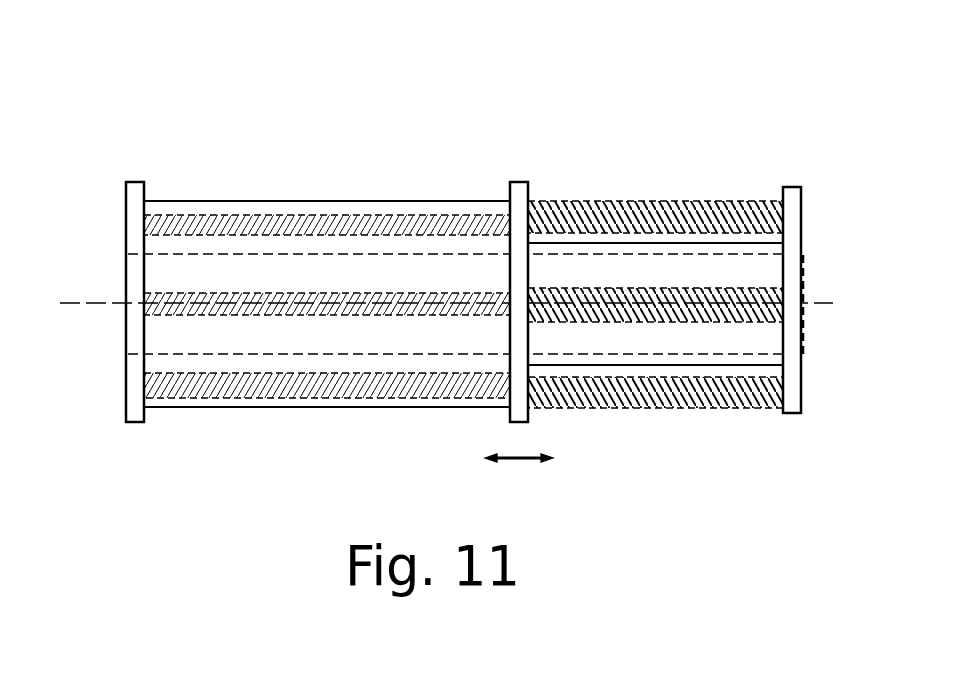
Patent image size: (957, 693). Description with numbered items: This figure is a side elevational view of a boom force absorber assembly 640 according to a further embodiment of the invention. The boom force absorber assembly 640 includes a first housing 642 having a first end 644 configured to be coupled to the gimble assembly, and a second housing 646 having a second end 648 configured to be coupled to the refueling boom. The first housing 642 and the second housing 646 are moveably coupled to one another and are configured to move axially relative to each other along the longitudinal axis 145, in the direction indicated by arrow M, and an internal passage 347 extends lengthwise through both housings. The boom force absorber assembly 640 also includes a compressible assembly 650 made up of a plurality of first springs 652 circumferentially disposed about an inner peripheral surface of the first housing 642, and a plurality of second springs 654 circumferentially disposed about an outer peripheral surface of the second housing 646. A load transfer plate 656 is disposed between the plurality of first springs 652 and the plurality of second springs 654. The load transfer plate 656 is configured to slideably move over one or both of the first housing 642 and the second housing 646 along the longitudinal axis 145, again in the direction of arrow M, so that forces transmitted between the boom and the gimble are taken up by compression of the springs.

The boom force absorber assembly 640 is at (183, 95).
The longitudinal axis 145 is at (103, 303).
The fluid passage 347 is at (377, 255).
The first end 644 is at (122, 162).
The first housing 642 is at (298, 200).
The first springs 652 is at (245, 220).
The load transfer plate 656 is at (510, 178).
The compressible assembly 650 is at (705, 480).
The second housing 646 is at (589, 242).
The second springs 654 is at (672, 296).
The second end 648 is at (801, 170).
The arrow M is at (520, 463).